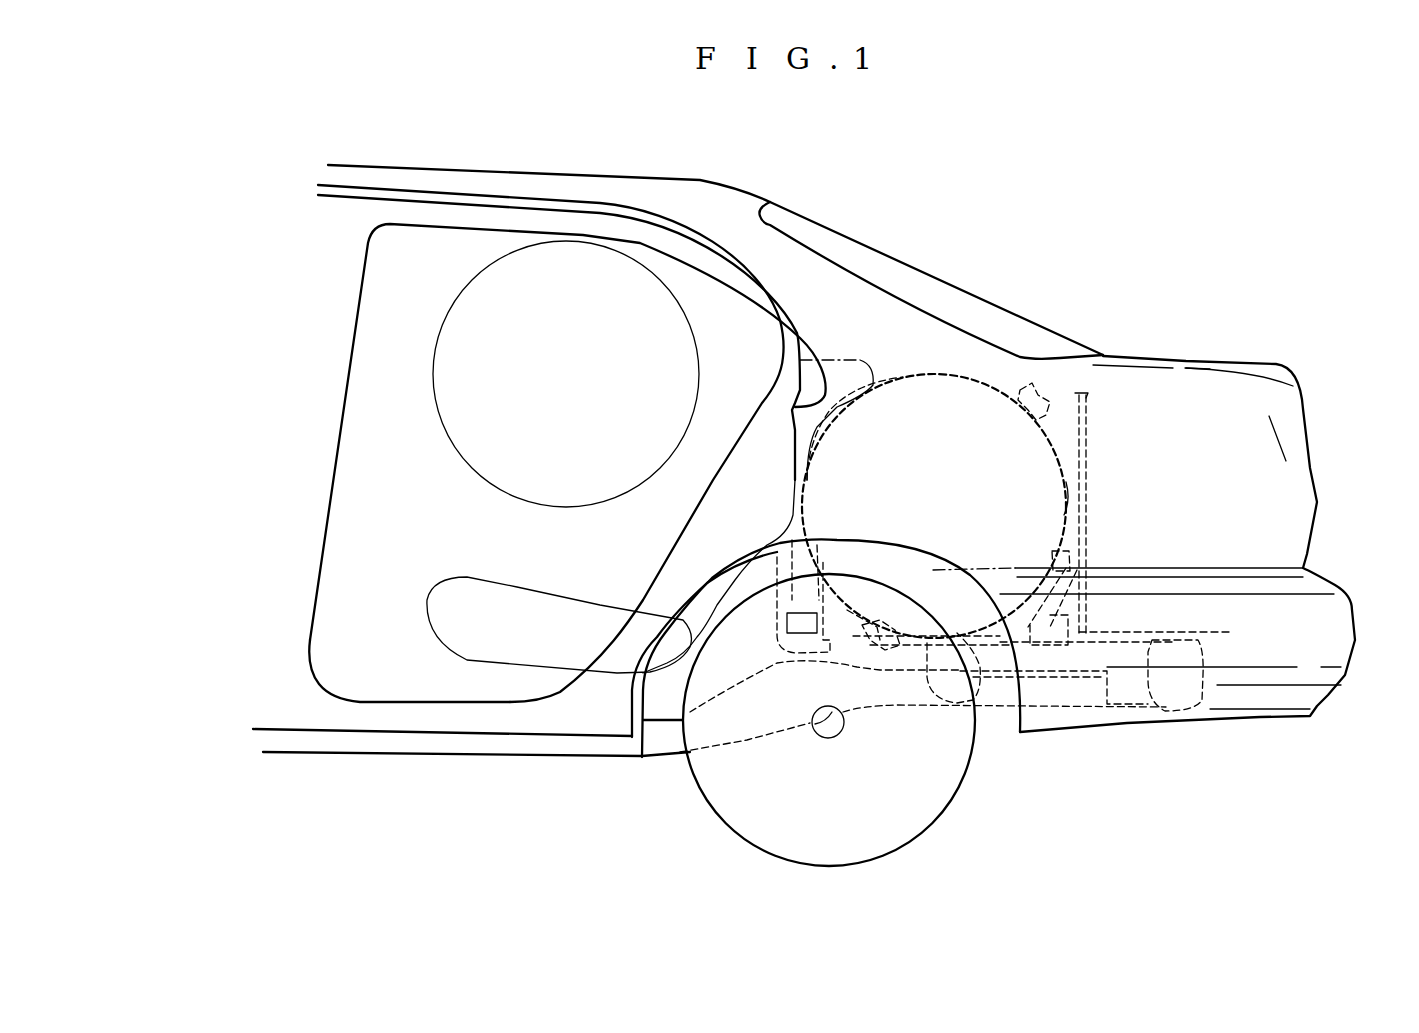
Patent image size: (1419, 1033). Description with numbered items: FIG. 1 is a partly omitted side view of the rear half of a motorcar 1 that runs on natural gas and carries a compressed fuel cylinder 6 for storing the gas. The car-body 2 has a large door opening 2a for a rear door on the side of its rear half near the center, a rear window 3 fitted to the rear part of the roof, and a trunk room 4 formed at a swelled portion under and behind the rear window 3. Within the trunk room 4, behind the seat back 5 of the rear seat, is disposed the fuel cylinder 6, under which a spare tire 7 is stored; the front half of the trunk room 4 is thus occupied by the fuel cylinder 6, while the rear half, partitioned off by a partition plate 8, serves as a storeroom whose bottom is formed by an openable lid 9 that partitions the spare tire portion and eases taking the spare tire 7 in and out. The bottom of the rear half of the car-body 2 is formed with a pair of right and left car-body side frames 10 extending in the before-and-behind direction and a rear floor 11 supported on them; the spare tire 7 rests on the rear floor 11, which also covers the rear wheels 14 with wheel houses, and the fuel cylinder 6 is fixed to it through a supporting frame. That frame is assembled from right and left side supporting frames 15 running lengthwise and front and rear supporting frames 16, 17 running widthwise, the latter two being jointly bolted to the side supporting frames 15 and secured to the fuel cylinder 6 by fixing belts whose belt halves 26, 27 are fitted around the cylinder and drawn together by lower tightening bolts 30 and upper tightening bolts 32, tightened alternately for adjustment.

The motorcar 1 is at (364, 157).
The car-body 2 is at (643, 172).
The door opening 2a is at (362, 662).
The rear window 3 is at (952, 278).
The trunk room 4 is at (1255, 484).
The seat back 5 is at (747, 417).
The fuel cylinder 6 is at (452, 427).
The spare tire 7 is at (1202, 688).
The partition plate 8 is at (1086, 471).
The openable lid 9 is at (1207, 633).
The car-body side frames 10 is at (864, 710).
The rear floor 11 is at (747, 680).
The rear wheels 14 is at (958, 790).
The side supporting frames 15 is at (920, 647).
The front supporting frame 16 is at (787, 557).
The rear supporting frame 17 is at (1069, 561).
The belt half 26 is at (908, 372).
The belt half 27 is at (1072, 502).
The tightening bolts 30 is at (880, 637).
The tightening bolts 32 is at (1033, 397).